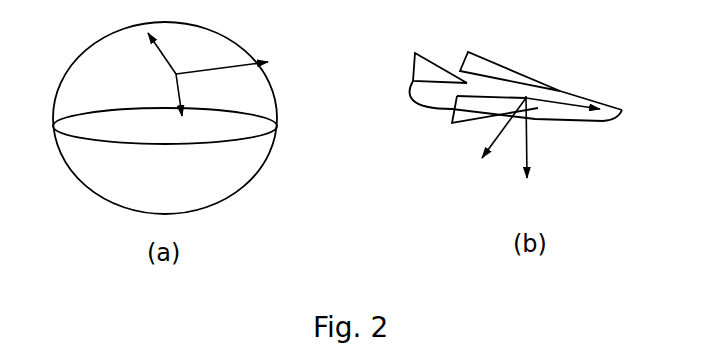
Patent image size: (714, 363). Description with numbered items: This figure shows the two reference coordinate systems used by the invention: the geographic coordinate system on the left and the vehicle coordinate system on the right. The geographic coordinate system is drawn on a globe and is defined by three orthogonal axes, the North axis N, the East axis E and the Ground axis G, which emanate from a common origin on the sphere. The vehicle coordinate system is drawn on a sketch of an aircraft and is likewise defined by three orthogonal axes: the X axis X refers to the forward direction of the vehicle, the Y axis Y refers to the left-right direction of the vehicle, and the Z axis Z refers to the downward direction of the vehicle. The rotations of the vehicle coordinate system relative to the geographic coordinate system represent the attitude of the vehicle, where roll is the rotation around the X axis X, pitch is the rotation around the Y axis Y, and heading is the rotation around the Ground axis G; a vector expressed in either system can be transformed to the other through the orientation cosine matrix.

The North axis N is at (164, 53).
The East axis E is at (231, 62).
The Ground axis G is at (174, 104).
The X axis X is at (570, 93).
The Y axis Y is at (491, 134).
The Z axis Z is at (533, 146).